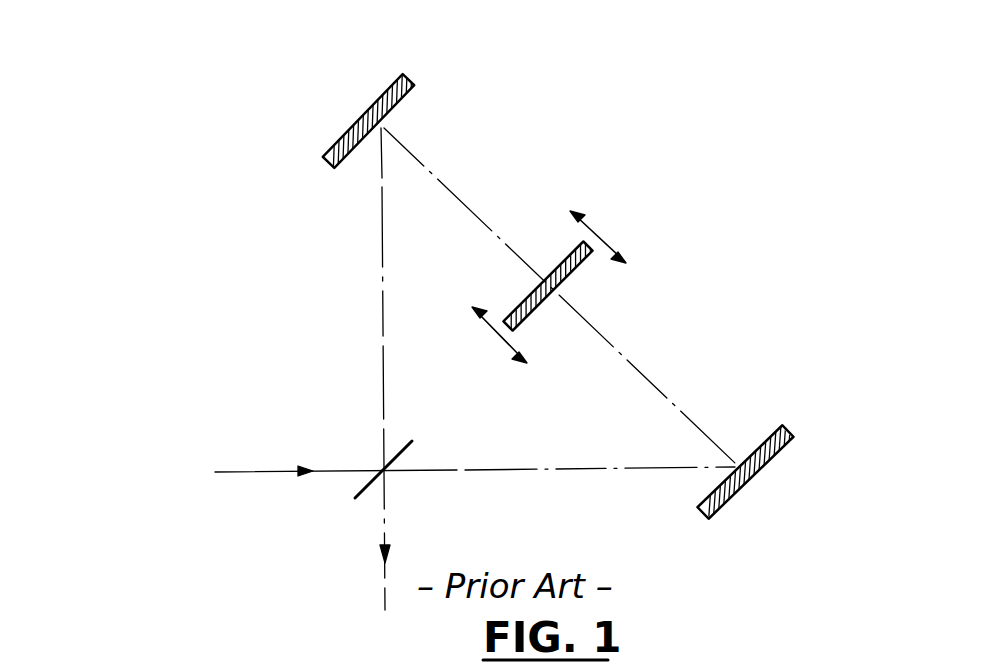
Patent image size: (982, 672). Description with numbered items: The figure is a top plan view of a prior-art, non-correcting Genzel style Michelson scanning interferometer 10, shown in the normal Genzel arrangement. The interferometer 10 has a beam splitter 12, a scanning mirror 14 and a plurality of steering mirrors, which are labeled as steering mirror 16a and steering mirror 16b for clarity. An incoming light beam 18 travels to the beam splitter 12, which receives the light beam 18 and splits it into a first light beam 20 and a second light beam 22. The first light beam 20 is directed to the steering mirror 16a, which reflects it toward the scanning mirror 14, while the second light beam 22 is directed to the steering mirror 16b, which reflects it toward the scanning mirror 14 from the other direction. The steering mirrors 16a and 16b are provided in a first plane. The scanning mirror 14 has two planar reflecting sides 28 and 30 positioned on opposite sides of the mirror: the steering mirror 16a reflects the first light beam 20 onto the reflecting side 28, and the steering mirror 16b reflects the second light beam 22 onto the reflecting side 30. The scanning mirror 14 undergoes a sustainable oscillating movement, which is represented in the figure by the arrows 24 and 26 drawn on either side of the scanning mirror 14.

The interferometer 10 is at (753, 181).
The beam splitter 12 is at (408, 446).
The scanning mirror 14 is at (580, 268).
The steering mirror 16a is at (395, 78).
The steering mirror 16b is at (787, 448).
The light beam 18 is at (245, 477).
The first light beam 20 is at (380, 217).
The second light beam 22 is at (518, 472).
The arrow 24 is at (602, 238).
The arrow 26 is at (488, 348).
The reflecting side 28 is at (521, 300).
The reflecting side 30 is at (540, 313).